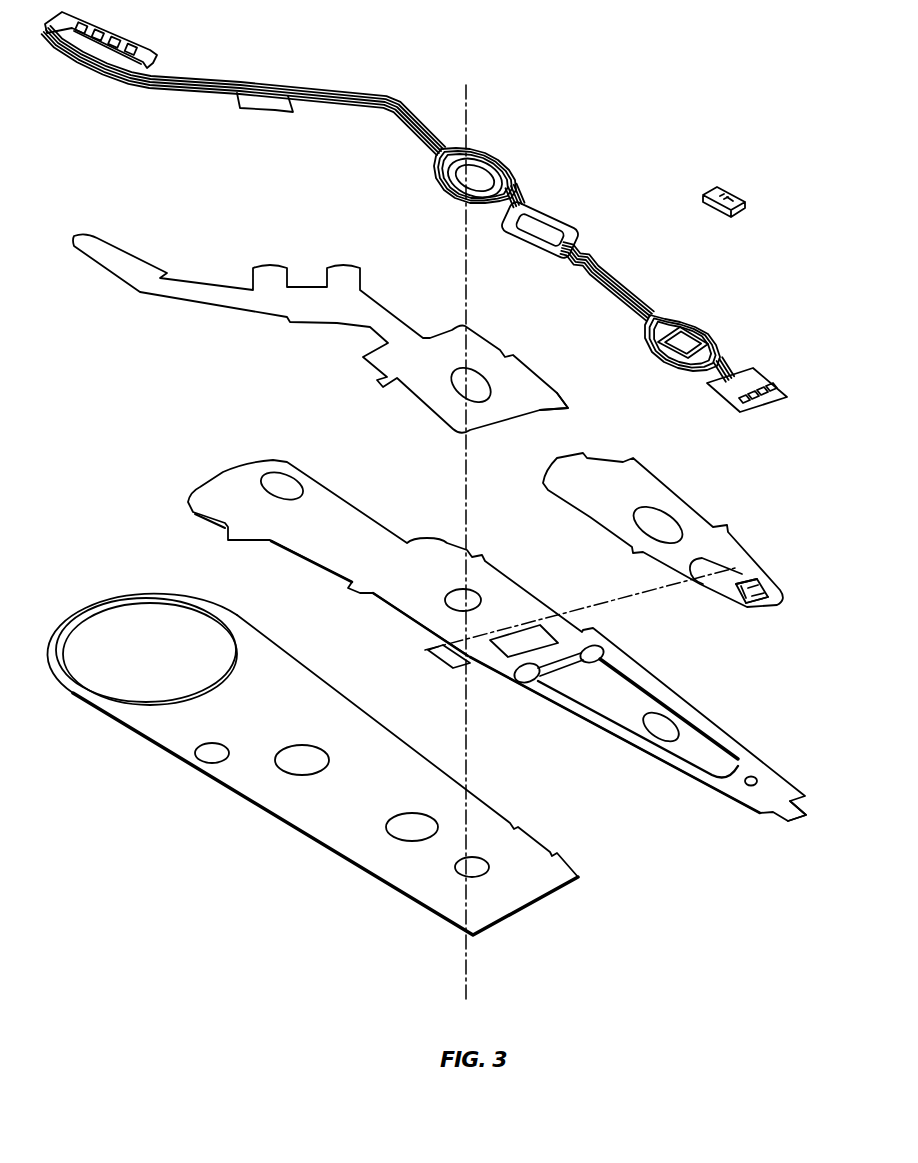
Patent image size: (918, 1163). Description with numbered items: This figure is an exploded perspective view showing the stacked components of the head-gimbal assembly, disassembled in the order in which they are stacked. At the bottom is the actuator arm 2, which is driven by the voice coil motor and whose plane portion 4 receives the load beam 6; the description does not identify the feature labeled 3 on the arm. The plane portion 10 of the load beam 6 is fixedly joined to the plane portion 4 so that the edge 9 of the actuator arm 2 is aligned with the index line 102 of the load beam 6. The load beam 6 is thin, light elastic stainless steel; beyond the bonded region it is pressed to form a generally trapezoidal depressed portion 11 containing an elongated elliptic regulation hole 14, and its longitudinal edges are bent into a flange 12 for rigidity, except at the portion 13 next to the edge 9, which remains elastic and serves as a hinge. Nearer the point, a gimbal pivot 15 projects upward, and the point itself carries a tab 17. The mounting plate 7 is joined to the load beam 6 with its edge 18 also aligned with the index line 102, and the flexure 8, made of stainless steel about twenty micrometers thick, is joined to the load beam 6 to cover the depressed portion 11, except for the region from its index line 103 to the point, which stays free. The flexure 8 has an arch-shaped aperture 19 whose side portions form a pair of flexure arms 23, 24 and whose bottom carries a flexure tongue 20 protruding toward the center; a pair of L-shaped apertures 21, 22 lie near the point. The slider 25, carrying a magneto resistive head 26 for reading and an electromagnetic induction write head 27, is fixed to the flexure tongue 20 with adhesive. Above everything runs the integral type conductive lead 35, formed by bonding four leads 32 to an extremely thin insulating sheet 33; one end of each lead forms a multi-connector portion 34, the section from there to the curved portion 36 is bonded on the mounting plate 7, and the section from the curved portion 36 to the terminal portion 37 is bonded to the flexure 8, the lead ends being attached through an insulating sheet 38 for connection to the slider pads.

The actuator arm 2 is at (312, 764).
The swage boss 3 is at (173, 625).
The plane portion 4 is at (312, 741).
The load beam 6 is at (497, 662).
The mounting plate 7 is at (349, 333).
The flexure 8 is at (683, 552).
The edge 9 is at (540, 903).
The plane portion 10 is at (377, 545).
The trapezoidal depressed portion 11 is at (613, 690).
The flange 12 is at (717, 725).
The hinge portion 13 is at (445, 662).
The regulation hole 14 is at (673, 723).
The gimbal pivot 15 is at (754, 777).
The tab 17 is at (788, 821).
The edge 18 is at (557, 397).
The arch-shaped aperture 19 is at (730, 580).
The flexure tongue 20 is at (768, 582).
The L-shaped aperture 21 is at (760, 608).
The L-shaped aperture 22 is at (764, 597).
The flexure arm 23 is at (729, 596).
The flexure arm 24 is at (748, 575).
The slider 25 is at (751, 184).
The magneto resistive head 26 is at (723, 193).
The electromagnetic induction write head 27 is at (733, 195).
The lead 32 is at (617, 277).
The insulating sheet 33 is at (712, 352).
The multi-connector portion 34 is at (150, 45).
The integral type conductive lead 35 is at (437, 231).
The curved portion 36 is at (573, 220).
The terminal portion 37 is at (770, 391).
The insulating sheet 38 is at (763, 410).
The index line 102 is at (590, 603).
The index line 103 is at (760, 570).